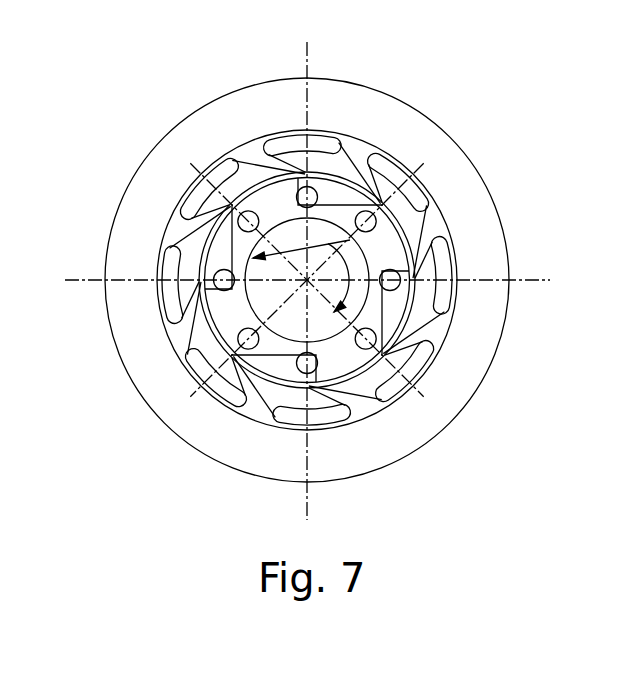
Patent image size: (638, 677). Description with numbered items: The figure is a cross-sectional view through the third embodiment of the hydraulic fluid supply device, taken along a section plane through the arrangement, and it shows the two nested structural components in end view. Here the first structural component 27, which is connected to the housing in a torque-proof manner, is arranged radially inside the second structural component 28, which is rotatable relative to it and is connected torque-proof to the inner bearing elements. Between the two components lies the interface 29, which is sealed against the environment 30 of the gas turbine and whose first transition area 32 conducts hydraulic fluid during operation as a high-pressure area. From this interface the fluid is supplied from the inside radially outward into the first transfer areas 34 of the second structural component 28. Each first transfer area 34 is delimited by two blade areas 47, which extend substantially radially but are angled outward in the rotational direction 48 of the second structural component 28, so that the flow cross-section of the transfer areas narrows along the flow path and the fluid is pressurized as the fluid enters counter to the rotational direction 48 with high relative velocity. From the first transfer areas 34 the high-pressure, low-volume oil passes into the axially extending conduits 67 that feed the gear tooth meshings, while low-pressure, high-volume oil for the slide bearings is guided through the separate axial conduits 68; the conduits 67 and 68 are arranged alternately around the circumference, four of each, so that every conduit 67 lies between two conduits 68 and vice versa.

The first structural component 27 is at (410, 245).
The second structural component 28 is at (203, 322).
The interface 29 is at (415, 228).
The environment 30 is at (431, 86).
The first transition area 32 is at (313, 393).
The first transfer area 34 is at (190, 250).
The blade area 47 is at (256, 158).
The rotational direction 48 is at (440, 320).
The conduit 67 is at (188, 162).
The conduit 68 is at (172, 253).